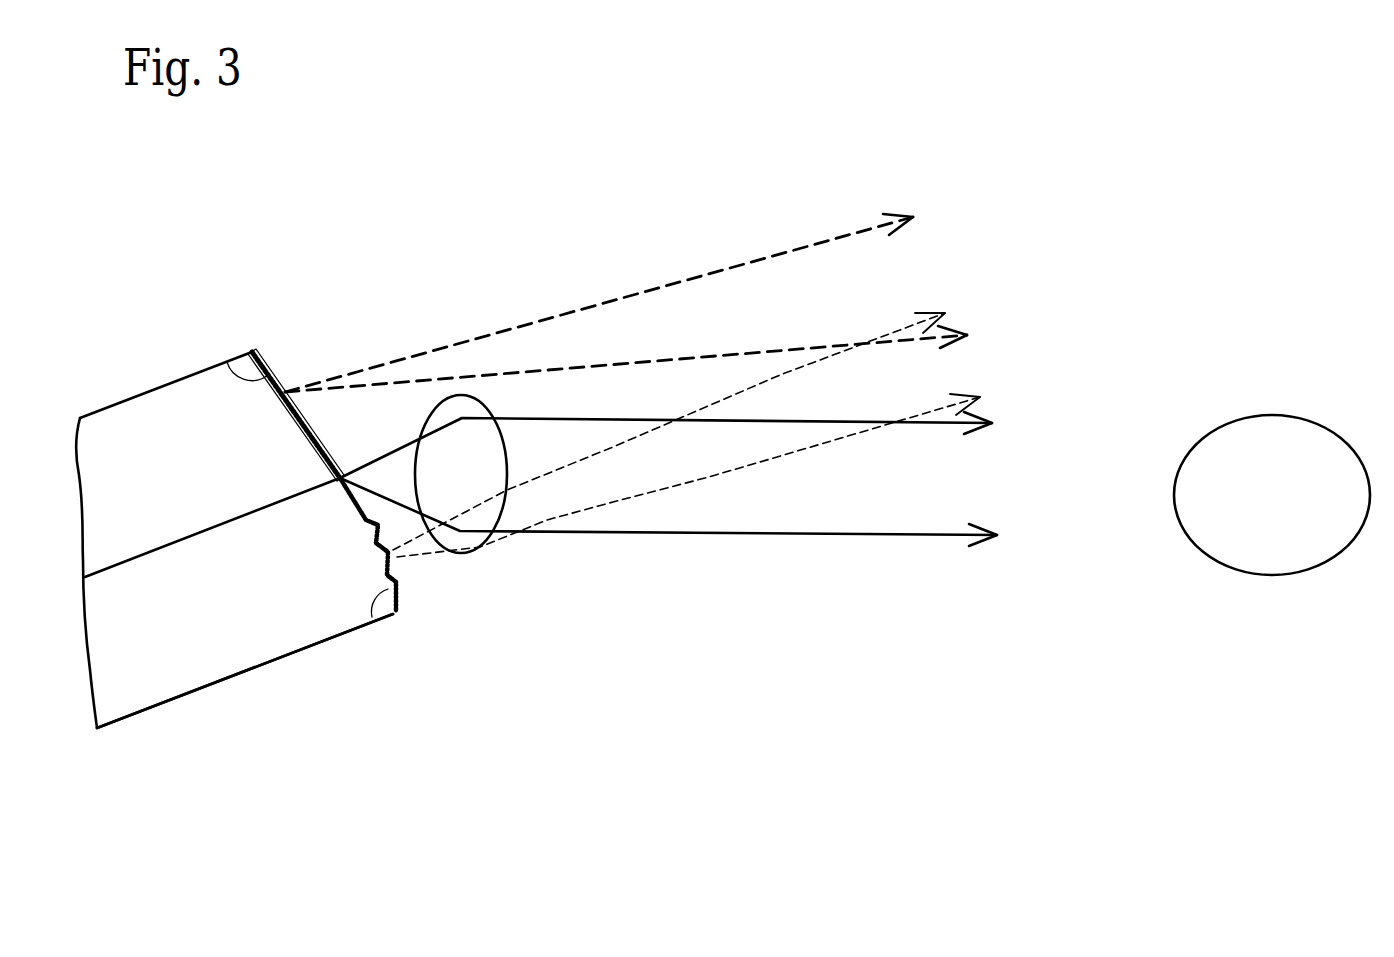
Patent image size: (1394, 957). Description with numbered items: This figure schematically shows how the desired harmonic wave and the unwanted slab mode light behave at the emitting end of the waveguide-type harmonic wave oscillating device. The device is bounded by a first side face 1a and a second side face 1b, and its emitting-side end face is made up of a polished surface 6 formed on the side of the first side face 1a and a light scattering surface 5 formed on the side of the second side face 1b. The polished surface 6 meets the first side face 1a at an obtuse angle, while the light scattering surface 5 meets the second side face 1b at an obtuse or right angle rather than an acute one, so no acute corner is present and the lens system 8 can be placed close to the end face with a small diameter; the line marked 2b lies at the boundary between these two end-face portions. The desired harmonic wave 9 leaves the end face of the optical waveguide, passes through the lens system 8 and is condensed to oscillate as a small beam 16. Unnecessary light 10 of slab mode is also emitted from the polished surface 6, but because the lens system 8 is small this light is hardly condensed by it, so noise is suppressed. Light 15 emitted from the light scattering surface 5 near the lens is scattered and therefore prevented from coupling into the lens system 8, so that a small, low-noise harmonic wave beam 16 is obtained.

The first side face 1a is at (153, 385).
The second side face 1b is at (291, 651).
The boundary of stepped portion 2b is at (338, 467).
The light scattering surface 5 is at (400, 583).
The polished surface 6 is at (277, 383).
The lens system 8 is at (465, 403).
The harmonic wave 9 is at (917, 425).
The unnecessary light of slab mode 10 is at (802, 347).
The light emitted from the light scattering surface 15 is at (630, 438).
The beam of harmonic wave 16 is at (1303, 440).